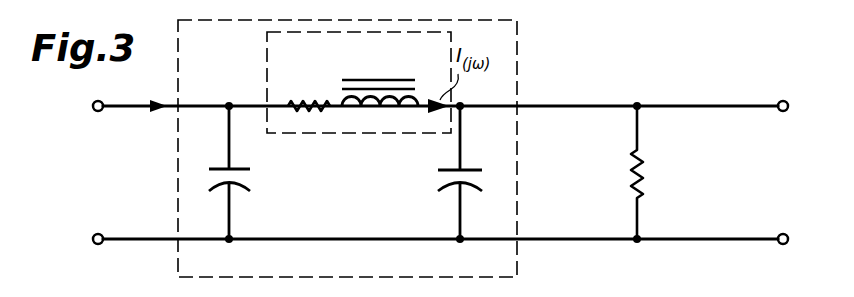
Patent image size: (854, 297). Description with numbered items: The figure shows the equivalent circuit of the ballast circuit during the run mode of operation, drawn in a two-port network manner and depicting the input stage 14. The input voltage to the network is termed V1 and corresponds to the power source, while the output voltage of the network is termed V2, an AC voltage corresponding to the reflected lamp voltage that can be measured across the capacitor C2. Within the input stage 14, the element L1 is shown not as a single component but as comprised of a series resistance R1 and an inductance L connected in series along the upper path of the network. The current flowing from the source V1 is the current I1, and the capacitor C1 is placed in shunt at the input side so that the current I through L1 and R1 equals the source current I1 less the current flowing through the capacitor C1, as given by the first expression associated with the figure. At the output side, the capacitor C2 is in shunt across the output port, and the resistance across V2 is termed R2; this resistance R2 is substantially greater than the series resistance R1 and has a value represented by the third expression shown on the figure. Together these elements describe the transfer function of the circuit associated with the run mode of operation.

The input stage 14 is at (518, 33).
The inductor L1 is at (348, 70).
The series resistance R1 is at (298, 97).
The inductance L is at (372, 108).
The capacitor C1 is at (251, 182).
The capacitor C2 is at (435, 180).
The resistance R2 is at (645, 162).
The current I1 is at (154, 83).
The input voltage V1 is at (98, 170).
The output voltage V2 is at (779, 168).